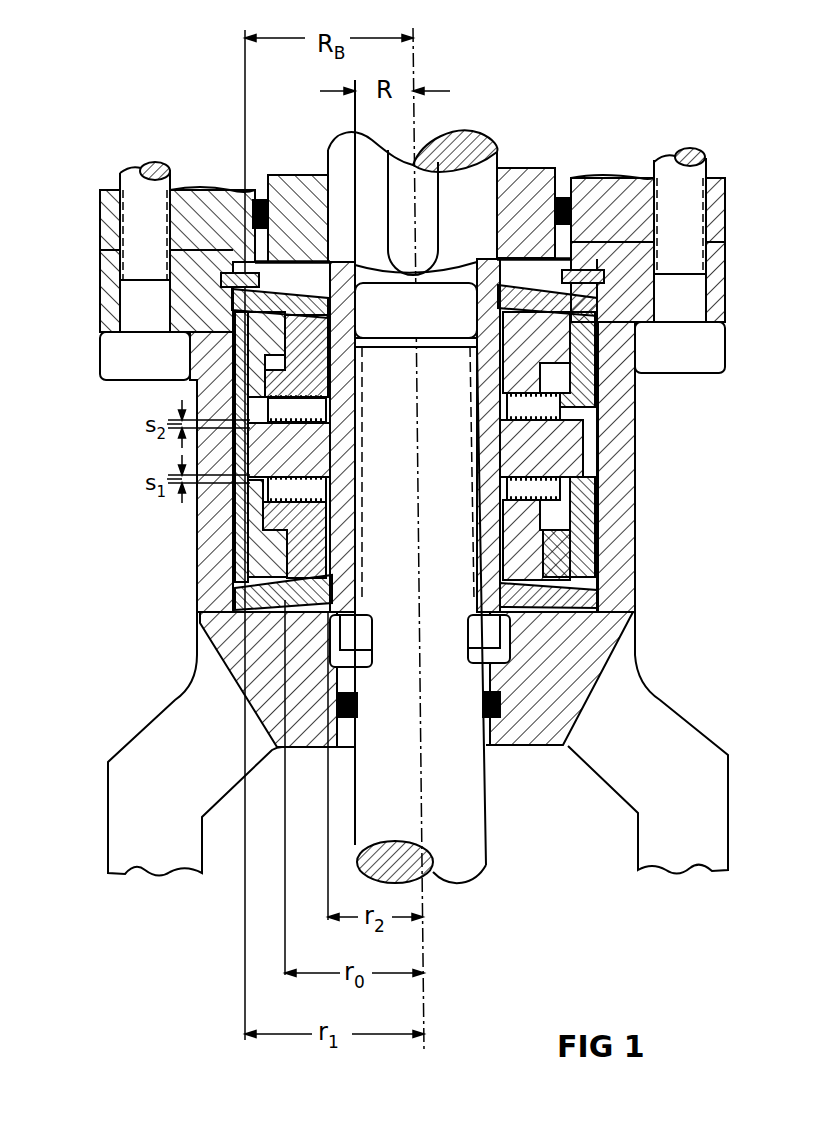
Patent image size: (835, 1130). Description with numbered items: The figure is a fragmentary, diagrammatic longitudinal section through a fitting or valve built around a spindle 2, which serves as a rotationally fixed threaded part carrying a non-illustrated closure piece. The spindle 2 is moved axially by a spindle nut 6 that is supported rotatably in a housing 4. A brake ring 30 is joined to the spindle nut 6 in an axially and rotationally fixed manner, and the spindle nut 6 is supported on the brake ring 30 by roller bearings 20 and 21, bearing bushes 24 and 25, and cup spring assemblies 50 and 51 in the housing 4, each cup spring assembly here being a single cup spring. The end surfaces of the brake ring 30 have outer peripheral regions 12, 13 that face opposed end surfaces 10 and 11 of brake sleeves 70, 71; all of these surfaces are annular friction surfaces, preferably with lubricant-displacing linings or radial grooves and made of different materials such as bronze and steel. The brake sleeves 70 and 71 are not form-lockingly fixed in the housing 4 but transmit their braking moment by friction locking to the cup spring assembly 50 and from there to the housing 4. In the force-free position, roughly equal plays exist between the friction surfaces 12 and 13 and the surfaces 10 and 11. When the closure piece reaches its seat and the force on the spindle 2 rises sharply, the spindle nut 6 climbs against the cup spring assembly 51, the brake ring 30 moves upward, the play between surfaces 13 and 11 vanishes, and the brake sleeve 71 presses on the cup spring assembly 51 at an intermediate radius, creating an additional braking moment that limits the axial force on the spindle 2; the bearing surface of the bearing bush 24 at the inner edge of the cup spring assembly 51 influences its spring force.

The spindle 2 is at (470, 817).
The housing 4 is at (615, 572).
The spindle nut 6 is at (344, 162).
The end surface of brake sleeve 10 is at (240, 512).
The end surface of brake sleeve 11 is at (237, 402).
The outer peripheral region of brake ring end surface 12 is at (270, 472).
The outer peripheral region of brake ring end surface 13 is at (270, 426).
The roller bearing 20 is at (540, 486).
The roller bearing 21 is at (540, 410).
The bearing bush 24 is at (315, 540).
The bearing bush 25 is at (330, 380).
The brake ring 30 is at (560, 442).
The cup spring assembly 50 is at (237, 606).
The cup spring assembly 51 is at (190, 301).
The brake sleeve 70 is at (582, 548).
The brake sleeve 71 is at (580, 350).